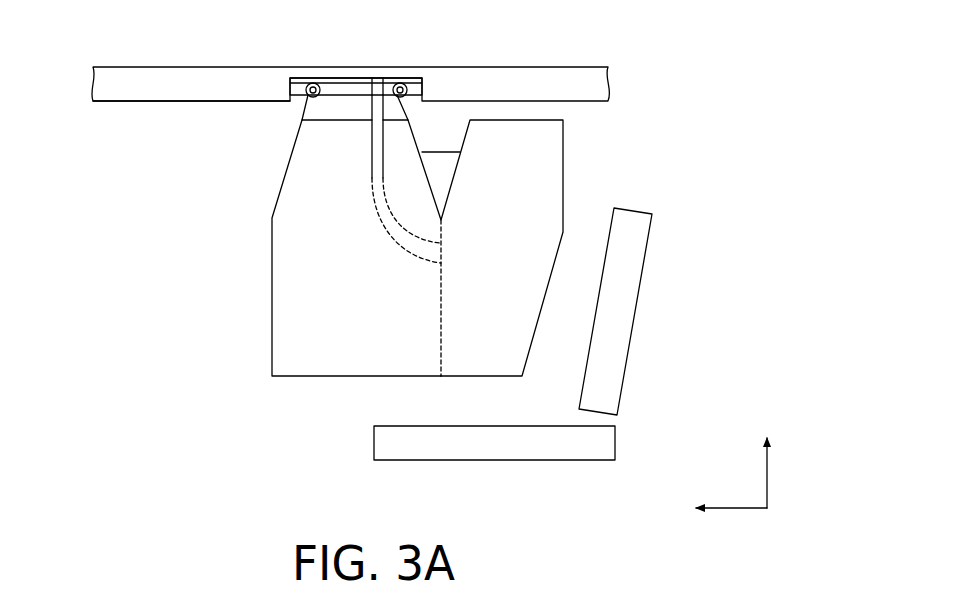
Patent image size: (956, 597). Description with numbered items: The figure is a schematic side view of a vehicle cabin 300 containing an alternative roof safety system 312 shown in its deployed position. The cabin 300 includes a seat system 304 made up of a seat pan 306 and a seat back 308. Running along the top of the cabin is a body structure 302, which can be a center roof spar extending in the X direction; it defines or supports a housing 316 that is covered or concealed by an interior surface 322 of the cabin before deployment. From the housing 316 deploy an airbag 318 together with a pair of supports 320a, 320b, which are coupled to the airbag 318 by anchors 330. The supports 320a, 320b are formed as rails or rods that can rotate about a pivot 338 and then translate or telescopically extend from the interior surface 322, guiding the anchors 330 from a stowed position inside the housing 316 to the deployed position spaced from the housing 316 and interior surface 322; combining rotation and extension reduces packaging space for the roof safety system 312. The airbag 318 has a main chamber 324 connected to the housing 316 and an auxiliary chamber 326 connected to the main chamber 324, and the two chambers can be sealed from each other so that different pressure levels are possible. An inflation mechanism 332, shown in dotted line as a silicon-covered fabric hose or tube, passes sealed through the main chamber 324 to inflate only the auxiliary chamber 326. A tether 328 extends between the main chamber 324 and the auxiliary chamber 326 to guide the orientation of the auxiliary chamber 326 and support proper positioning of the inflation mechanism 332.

The vehicle cabin 300 is at (663, 143).
The body structure 302 is at (535, 67).
The seat system 304 is at (660, 406).
The seat pan 306 is at (374, 432).
The seat back 308 is at (652, 214).
The roof safety system 312 is at (216, 43).
The housing 316 is at (422, 90).
The airbag 318 is at (272, 218).
The support 320a is at (313, 78).
The support 320b is at (400, 78).
The interior surface 322 is at (173, 103).
The main chamber 324 is at (368, 307).
The auxiliary chamber 326 is at (513, 307).
The tether 328 is at (442, 155).
The anchors 330 is at (304, 106).
The inflation mechanism 332 is at (376, 187).
The pivot 338 is at (363, 78).